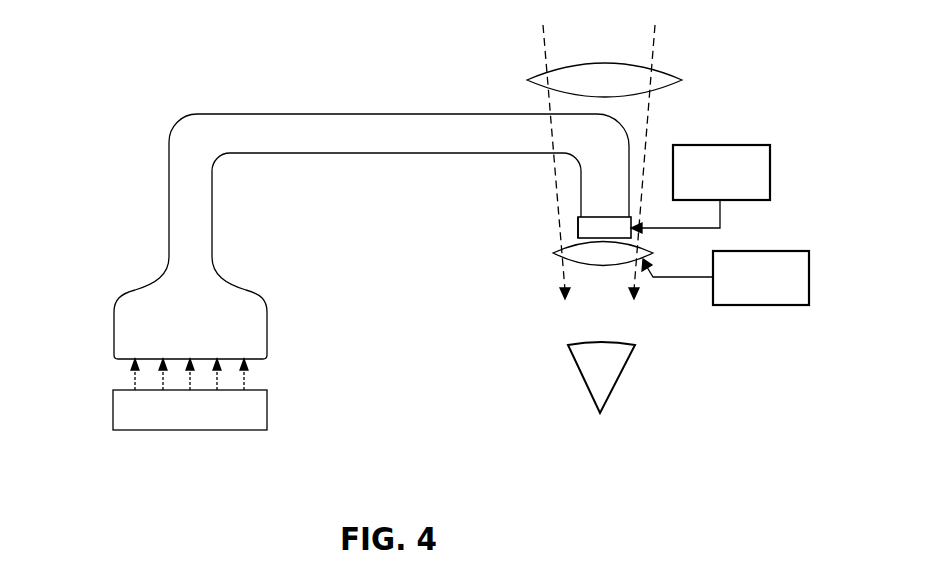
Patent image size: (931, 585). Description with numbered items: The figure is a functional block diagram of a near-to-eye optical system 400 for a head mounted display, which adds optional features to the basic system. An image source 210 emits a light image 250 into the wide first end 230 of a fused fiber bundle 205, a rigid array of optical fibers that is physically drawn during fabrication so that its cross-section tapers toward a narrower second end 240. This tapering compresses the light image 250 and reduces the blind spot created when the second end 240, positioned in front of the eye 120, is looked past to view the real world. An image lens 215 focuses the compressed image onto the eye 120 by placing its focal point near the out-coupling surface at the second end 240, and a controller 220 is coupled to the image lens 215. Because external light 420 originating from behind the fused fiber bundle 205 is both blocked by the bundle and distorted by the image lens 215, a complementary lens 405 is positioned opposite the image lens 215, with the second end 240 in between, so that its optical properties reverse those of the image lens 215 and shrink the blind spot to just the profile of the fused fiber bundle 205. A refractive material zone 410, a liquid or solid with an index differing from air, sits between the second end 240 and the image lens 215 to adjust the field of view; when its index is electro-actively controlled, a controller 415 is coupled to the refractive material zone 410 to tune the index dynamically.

The near-to-eye optical system 400 is at (128, 57).
The fused fiber bundle 205 is at (510, 146).
The first end 230 is at (204, 347).
The image source 210 is at (204, 420).
The light image 250 is at (120, 377).
The complementary lens 405 is at (619, 90).
The external light 420 is at (547, 53).
The refractive material zone 410 is at (578, 227).
The second end 240 is at (618, 206).
The controller 415 is at (735, 189).
The image lens 215 is at (617, 261).
The controller 220 is at (775, 296).
The eye 120 is at (615, 371).